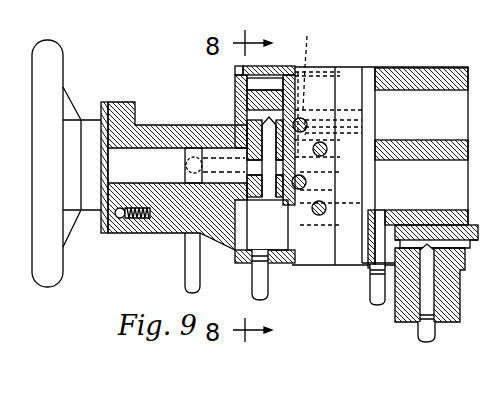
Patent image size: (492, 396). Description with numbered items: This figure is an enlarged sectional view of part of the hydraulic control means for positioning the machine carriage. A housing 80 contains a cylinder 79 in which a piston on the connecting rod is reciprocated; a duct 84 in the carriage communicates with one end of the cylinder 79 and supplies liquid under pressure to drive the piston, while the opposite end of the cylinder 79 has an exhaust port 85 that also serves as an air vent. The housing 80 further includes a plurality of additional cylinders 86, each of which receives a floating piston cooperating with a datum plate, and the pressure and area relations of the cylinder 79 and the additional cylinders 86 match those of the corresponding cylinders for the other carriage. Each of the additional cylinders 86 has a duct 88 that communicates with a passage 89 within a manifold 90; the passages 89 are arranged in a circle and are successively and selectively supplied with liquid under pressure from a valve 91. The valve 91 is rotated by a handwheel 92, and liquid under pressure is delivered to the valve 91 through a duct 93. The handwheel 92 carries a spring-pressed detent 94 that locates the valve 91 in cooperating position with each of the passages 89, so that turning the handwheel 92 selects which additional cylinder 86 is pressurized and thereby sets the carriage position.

The cylinder 79 is at (410, 160).
The housing 80 is at (372, 67).
The duct 84 is at (445, 248).
The exhaust port 85 is at (378, 283).
The additional cylinders 86 is at (405, 97).
The duct 88 is at (318, 110).
The passage 89 is at (307, 64).
The manifold 90 is at (325, 67).
The valve 91 is at (247, 99).
The handwheel 92 is at (57, 258).
The duct 93 is at (186, 268).
The spring-pressed detent 94 is at (125, 232).